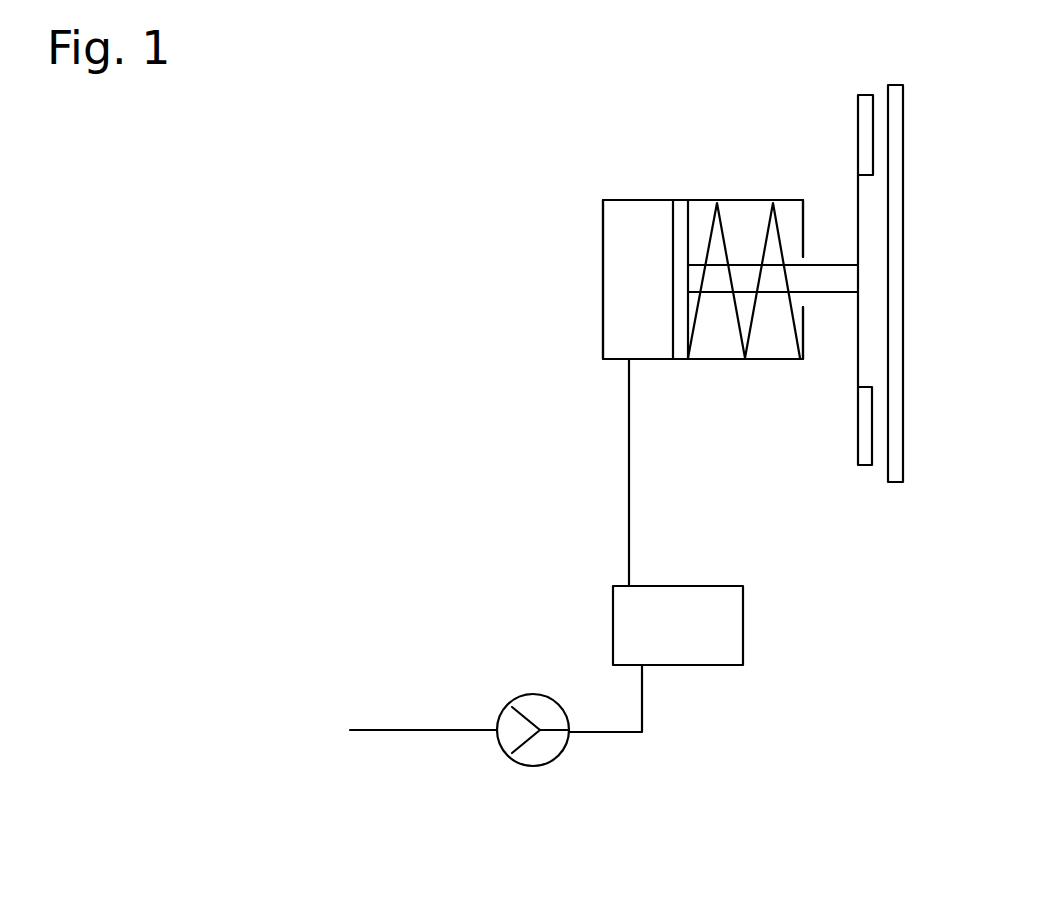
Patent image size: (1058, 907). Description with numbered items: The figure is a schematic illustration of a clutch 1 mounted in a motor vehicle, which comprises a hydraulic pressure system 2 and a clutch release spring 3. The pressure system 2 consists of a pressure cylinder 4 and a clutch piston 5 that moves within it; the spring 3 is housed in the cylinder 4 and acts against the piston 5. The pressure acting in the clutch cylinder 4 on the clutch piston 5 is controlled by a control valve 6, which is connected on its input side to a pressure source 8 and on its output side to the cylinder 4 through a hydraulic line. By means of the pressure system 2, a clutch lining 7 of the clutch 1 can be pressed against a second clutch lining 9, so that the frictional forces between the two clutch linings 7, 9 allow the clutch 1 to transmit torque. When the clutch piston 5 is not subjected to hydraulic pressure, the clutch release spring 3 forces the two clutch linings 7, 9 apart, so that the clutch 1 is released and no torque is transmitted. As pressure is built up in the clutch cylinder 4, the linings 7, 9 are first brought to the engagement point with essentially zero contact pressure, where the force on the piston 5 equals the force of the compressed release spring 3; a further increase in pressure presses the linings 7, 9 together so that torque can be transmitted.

The clutch 1 is at (328, 330).
The hydraulic pressure system 2 is at (595, 510).
The clutch release spring 3 is at (722, 228).
The pressure cylinder 4 is at (631, 217).
The clutch piston 5 is at (680, 213).
The control valve 6 is at (728, 655).
The clutch lining 7 is at (862, 157).
The pressure source 8 is at (543, 758).
The clutch lining 9 is at (905, 133).